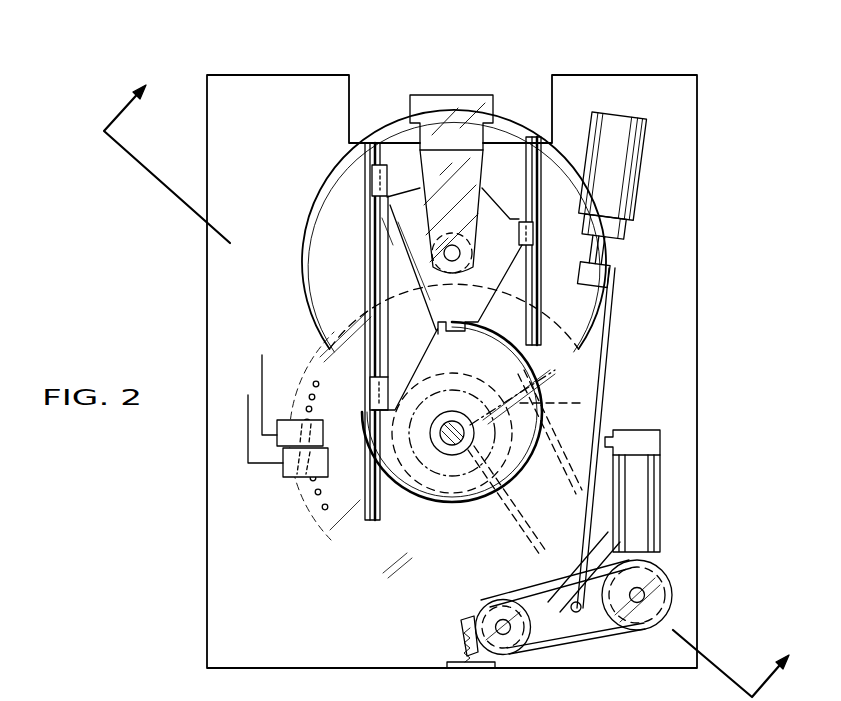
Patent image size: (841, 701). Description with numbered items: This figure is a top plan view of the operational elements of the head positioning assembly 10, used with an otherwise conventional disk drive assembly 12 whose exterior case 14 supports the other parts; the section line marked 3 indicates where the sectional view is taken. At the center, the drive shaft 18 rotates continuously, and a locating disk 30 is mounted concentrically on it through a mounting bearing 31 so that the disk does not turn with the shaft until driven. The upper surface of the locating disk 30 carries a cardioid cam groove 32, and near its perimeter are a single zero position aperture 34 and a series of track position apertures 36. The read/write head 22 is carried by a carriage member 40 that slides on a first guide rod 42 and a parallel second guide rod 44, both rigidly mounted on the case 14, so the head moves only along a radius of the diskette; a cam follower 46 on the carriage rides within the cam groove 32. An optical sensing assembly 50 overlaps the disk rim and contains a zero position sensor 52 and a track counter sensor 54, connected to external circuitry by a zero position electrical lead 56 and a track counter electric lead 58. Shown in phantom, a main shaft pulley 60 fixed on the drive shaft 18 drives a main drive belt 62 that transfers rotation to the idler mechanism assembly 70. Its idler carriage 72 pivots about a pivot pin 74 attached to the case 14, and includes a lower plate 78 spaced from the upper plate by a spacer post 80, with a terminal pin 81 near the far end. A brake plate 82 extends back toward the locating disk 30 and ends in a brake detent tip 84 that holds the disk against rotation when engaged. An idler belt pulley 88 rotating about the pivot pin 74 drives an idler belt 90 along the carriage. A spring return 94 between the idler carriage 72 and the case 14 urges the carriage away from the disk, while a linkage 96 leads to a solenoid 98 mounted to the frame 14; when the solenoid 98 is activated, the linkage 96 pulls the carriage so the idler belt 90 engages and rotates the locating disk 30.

The section line 3- 3 is at (454, 380).
The head positioning assembly 10 is at (676, 420).
The disk drive assembly 12 is at (440, 334).
The exterior case 14 is at (697, 233).
The drive shaft 18 is at (452, 420).
The read/write head 22 is at (456, 246).
The locating disk 30 is at (401, 547).
The mounting bearing 31 is at (452, 422).
The cardioid cam groove 32 is at (523, 368).
The zero position aperture 34 is at (323, 444).
The track position apertures 36 is at (314, 383).
The carriage member 40 is at (463, 183).
The first guide rod 42 is at (366, 212).
The second guide rod 44 is at (538, 181).
The cam follower 46 is at (480, 306).
The optical sensing assembly 50 is at (229, 440).
The zero position sensor 52 is at (288, 480).
The track counter sensor 54 is at (283, 440).
The zero position electrical lead 56 is at (248, 437).
The track counter electric lead 58 is at (262, 360).
The main shaft pulley 60 is at (583, 403).
The main drive belt 62 is at (613, 540).
The idler mechanism assembly 70 is at (609, 630).
The idler carriage 72 is at (665, 638).
The pivot pin 74 is at (671, 595).
The lower plate 78 is at (550, 614).
The spacer post 80 is at (582, 610).
The terminal pin 81 is at (462, 622).
The brake plate 82 is at (647, 480).
The brake detent tip 84 is at (673, 458).
The idler belt pulley 88 is at (655, 595).
The idler belt 90 is at (547, 648).
The spring return 94 is at (462, 643).
The linkage 96 is at (615, 306).
The solenoid 98 is at (627, 146).